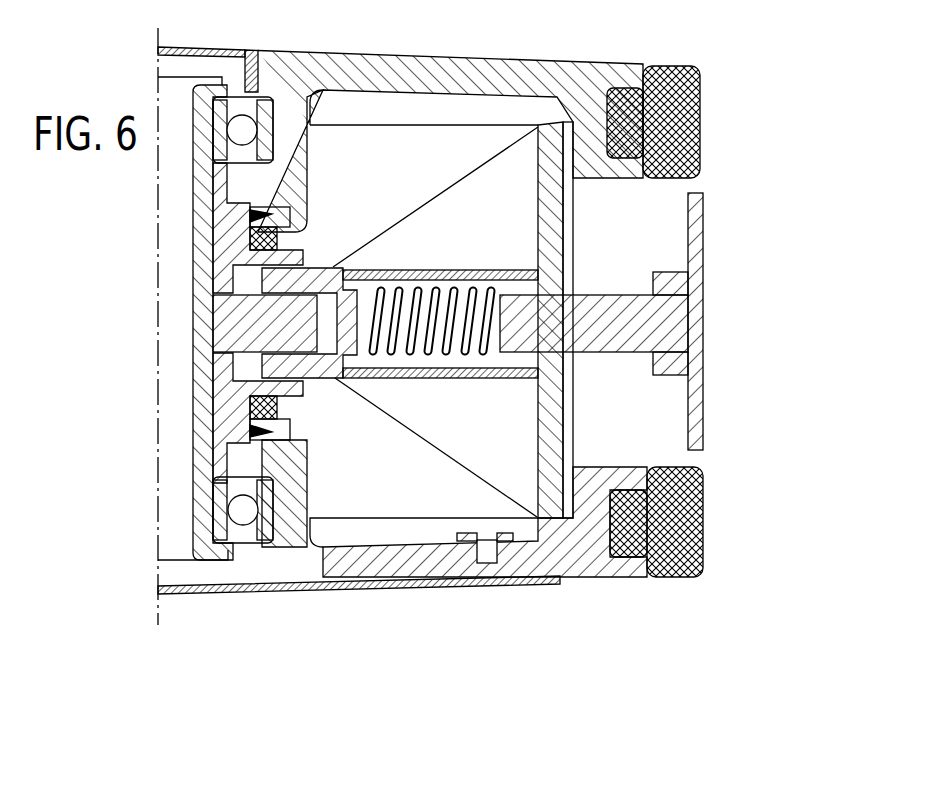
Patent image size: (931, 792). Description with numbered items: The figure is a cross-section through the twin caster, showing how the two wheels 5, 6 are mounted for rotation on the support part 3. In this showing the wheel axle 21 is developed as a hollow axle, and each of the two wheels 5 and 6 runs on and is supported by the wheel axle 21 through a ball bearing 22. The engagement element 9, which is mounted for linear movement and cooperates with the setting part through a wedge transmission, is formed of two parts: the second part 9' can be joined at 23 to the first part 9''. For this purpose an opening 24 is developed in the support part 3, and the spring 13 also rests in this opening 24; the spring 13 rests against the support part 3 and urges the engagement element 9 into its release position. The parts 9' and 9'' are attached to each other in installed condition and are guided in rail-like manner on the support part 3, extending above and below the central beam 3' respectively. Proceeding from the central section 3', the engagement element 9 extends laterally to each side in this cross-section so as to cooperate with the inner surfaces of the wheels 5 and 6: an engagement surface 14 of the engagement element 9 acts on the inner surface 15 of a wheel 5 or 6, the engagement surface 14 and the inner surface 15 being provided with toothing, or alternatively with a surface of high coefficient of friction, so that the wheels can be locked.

The support part 3 is at (197, 323).
The central beam 3' is at (652, 323).
The wheel 5 is at (598, 83).
The wheel 6 is at (576, 545).
The engagement element 9 is at (680, 320).
The second part of the engagement element 9' is at (424, 528).
The first part of the engagement element 9'' is at (436, 260).
The spring 13 is at (567, 283).
The engagement surface 14 is at (640, 93).
The inner surface 15 is at (650, 145).
The wheel axle 21 is at (180, 523).
The ball bearing 22 is at (273, 100).
The joint of the engagement element parts 23 is at (350, 150).
The opening 24 is at (343, 262).